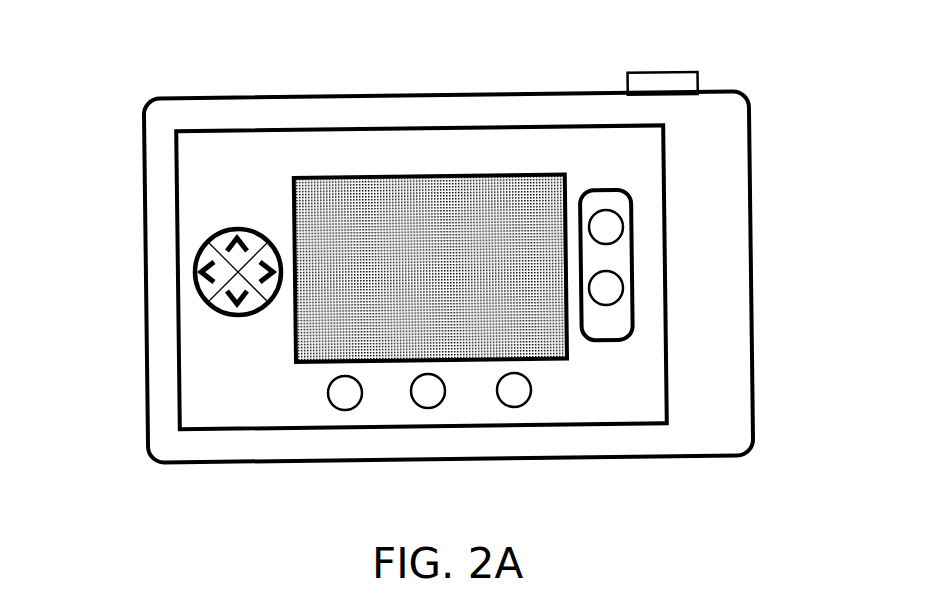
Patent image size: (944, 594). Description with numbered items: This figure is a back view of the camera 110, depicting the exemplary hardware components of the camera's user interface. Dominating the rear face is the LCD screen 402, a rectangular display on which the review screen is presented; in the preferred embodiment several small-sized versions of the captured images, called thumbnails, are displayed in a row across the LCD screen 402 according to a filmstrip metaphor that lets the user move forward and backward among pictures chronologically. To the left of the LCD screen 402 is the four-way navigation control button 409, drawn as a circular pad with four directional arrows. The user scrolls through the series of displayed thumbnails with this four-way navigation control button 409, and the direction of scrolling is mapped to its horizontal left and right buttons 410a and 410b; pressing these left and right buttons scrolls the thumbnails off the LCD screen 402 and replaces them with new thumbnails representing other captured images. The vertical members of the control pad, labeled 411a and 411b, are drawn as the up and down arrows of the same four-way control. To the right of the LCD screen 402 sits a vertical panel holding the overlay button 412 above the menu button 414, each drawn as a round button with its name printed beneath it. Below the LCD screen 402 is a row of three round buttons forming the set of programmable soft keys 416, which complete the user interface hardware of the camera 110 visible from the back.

The camera 110 is at (584, 22).
The LCD screen 402 is at (465, 177).
The four-way navigation control button 409 is at (154, 243).
The left button 410a is at (197, 261).
The right button 410b is at (200, 289).
The up direction button 411a is at (233, 231).
The down direction button 411b is at (233, 313).
The overlay button 412 is at (615, 211).
The menu button 414 is at (615, 273).
The programmable soft keys 416 is at (514, 408).